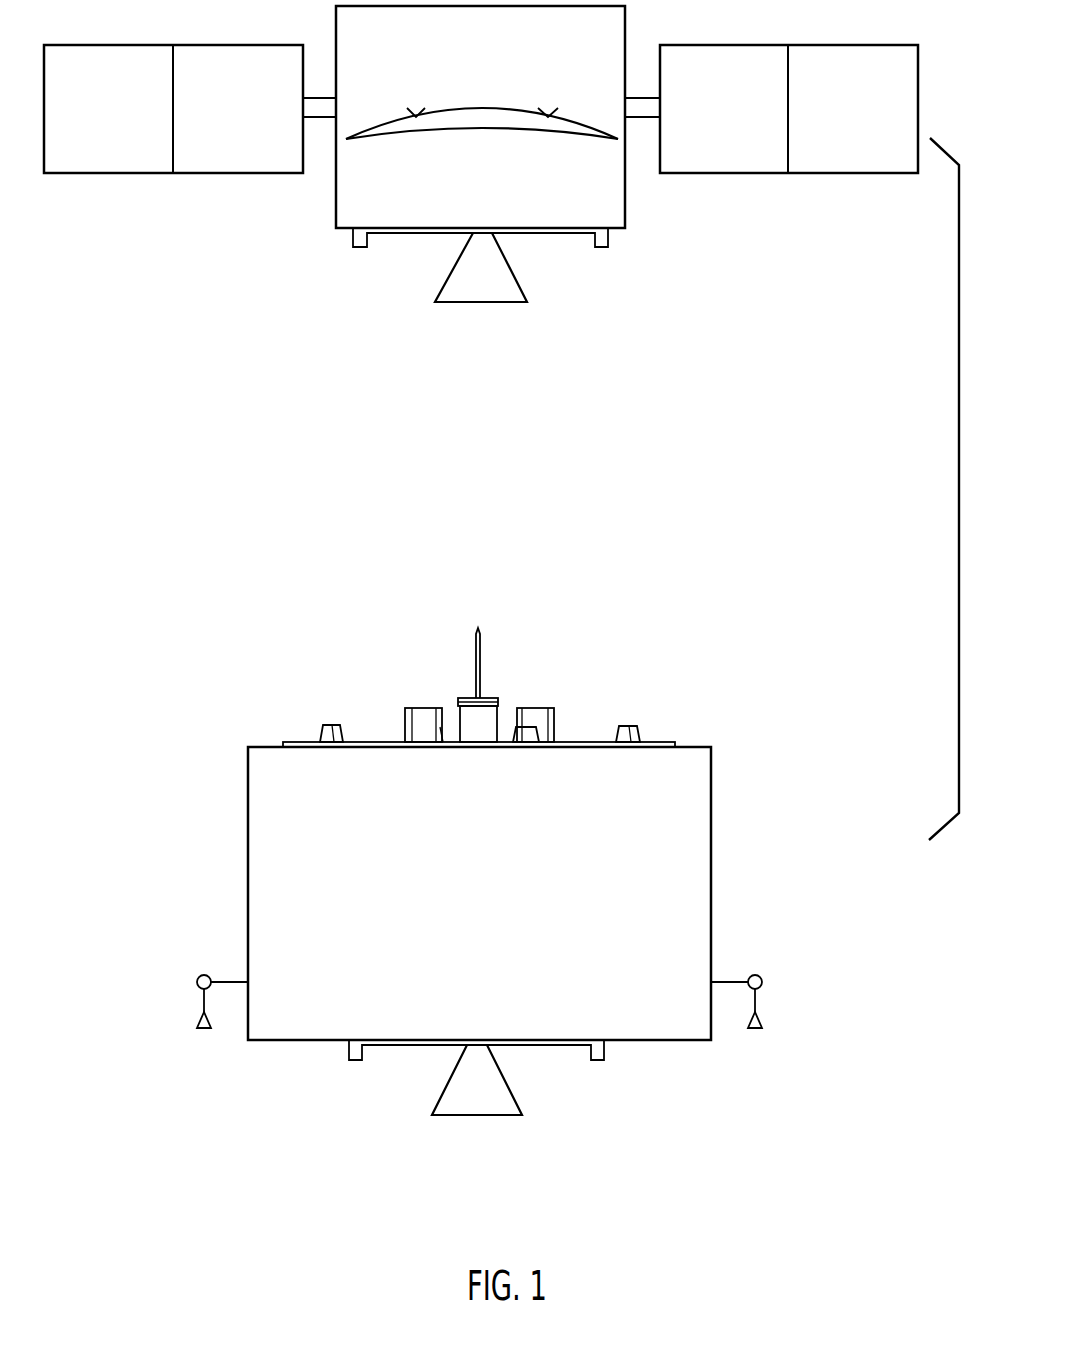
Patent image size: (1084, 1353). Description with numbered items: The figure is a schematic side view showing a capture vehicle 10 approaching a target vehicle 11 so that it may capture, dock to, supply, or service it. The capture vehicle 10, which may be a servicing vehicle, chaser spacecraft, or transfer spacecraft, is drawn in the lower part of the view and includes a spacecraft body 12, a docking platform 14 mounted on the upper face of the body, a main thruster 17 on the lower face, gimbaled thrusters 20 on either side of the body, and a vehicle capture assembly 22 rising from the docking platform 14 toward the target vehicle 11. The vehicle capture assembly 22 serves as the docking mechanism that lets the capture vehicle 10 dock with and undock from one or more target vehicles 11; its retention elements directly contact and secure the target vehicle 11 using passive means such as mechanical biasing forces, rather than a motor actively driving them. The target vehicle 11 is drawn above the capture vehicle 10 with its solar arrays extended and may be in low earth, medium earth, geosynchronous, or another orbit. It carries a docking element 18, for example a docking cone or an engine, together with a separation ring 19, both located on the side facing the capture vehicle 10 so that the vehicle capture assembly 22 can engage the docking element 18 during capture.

The capture vehicle 10 is at (700, 576).
The target vehicle 11 is at (613, 206).
The spacecraft body 12 is at (678, 878).
The docking platform 14 is at (302, 740).
The main thruster 17 is at (503, 1102).
The docking element 18 is at (508, 288).
The separation ring 19 is at (602, 245).
The gimbaled thrusters 20 is at (203, 1002).
The vehicle capture assembly 22 is at (475, 640).